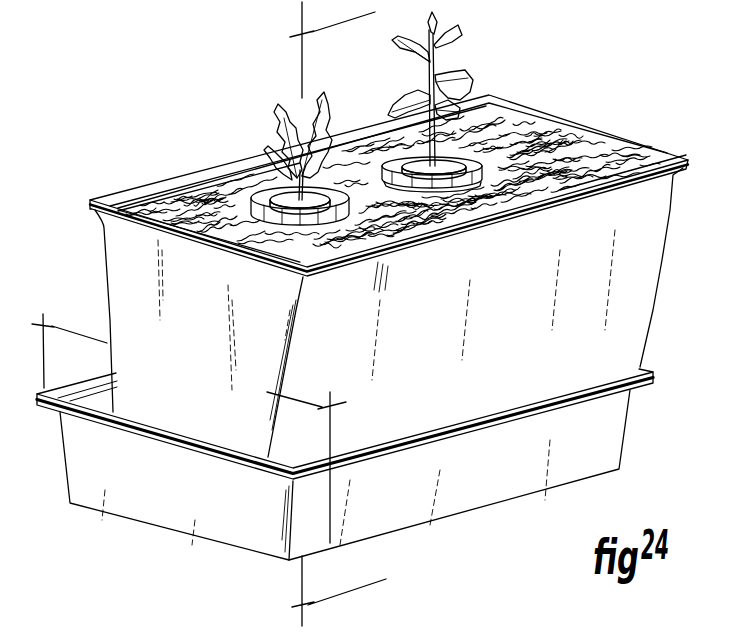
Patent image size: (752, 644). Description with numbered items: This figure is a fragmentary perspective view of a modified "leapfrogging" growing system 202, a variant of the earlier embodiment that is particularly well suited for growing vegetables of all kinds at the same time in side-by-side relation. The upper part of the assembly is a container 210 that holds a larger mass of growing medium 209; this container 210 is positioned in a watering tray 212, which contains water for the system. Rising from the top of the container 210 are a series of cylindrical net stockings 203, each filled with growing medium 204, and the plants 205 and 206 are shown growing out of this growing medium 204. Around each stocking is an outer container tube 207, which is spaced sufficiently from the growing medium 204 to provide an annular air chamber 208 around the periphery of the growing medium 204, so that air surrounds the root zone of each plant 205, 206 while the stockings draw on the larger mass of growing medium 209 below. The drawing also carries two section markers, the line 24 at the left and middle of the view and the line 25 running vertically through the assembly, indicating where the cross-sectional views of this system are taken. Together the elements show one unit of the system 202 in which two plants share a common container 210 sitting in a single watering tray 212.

The growing system 202 is at (517, 80).
The cylindrical net stocking 203 is at (478, 118).
The growing medium 204 is at (262, 155).
The plant 205 is at (300, 128).
The plant 206 is at (420, 62).
The outer container tube 207 is at (402, 166).
The annular air chamber 208 is at (401, 180).
The larger mass of growing medium 209 is at (572, 182).
The container 210 is at (590, 283).
The watering tray 212 is at (345, 464).
The section line 24 is at (189, 413).
The section line 25 is at (318, 319).